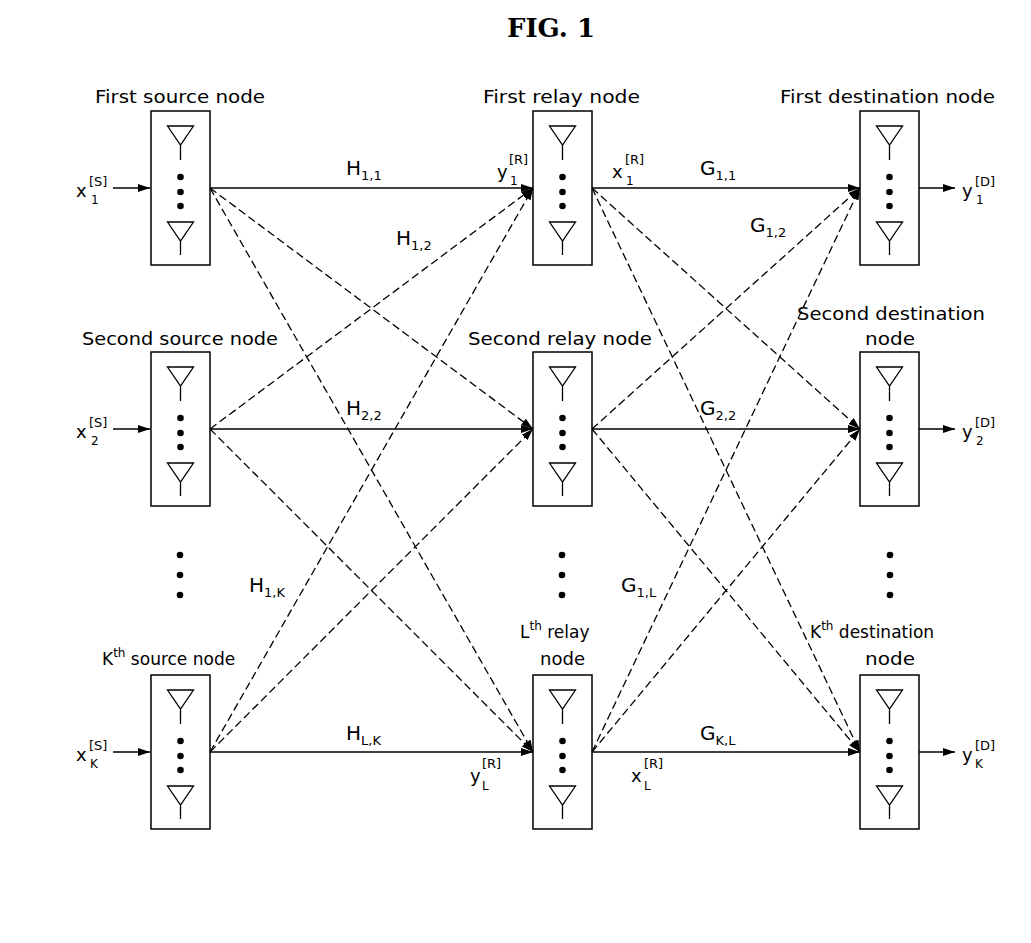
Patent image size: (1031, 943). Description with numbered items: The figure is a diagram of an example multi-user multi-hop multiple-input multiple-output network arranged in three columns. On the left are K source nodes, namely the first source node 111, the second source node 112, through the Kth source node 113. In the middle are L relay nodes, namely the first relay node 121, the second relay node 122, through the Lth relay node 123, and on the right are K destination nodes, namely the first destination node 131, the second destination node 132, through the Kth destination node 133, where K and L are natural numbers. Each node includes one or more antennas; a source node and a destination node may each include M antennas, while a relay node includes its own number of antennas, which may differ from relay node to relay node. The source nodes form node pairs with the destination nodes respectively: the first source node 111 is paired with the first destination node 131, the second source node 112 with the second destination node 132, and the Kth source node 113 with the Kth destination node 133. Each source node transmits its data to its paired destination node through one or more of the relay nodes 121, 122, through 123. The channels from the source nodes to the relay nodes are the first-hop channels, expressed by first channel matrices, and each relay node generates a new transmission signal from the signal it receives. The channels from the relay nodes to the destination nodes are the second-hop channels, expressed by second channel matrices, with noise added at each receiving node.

The first source node 111 is at (210, 131).
The second source node 112 is at (151, 370).
The Kth source node 113 is at (151, 692).
The first relay node 121 is at (533, 122).
The second relay node 122 is at (533, 364).
The Lth relay node 123 is at (533, 677).
The first destination node 131 is at (919, 131).
The second destination node 132 is at (919, 372).
The Kth destination node 133 is at (919, 695).